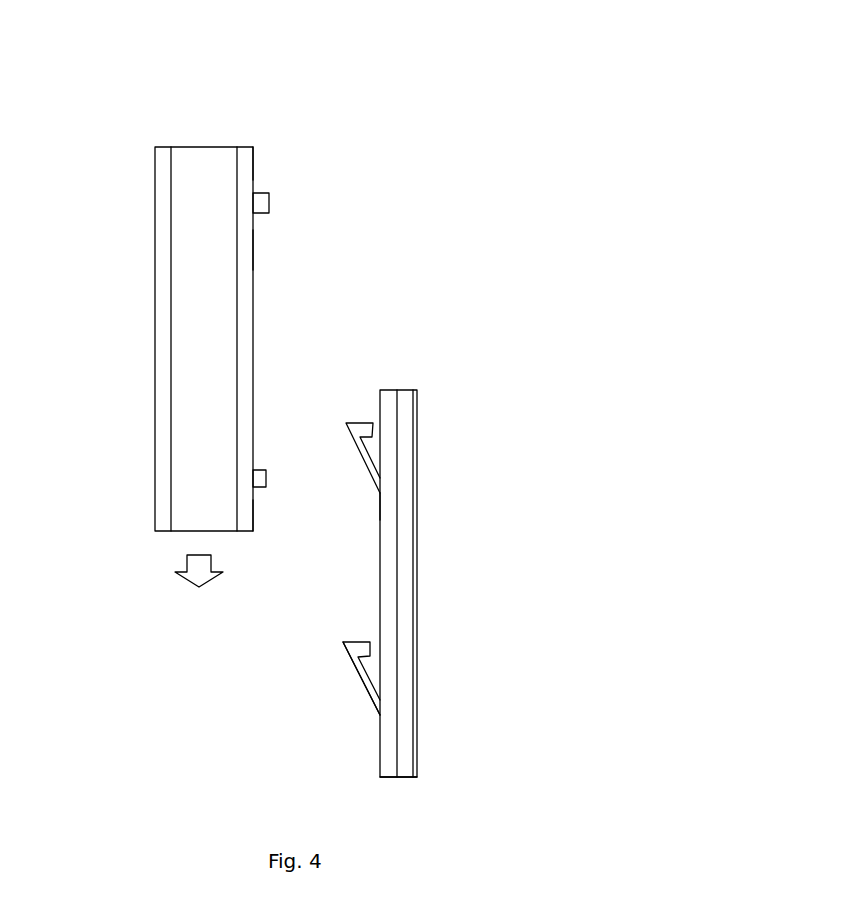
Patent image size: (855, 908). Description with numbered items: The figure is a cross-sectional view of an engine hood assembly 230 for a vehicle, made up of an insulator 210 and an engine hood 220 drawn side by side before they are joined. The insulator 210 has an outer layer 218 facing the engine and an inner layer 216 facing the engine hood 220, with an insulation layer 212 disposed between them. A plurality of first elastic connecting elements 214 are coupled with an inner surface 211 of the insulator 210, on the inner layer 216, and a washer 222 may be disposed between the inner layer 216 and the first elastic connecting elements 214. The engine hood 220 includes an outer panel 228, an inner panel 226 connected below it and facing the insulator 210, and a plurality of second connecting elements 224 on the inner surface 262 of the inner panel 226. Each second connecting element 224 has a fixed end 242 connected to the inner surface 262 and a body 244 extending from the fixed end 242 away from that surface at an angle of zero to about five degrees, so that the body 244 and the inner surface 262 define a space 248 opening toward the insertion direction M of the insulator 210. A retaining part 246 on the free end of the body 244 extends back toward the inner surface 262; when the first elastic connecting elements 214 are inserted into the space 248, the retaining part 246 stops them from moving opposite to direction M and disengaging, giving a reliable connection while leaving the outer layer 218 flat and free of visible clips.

The engine hood assembly 230 is at (427, 92).
The insulator 210 is at (223, 350).
The outer layer 218 is at (163, 203).
The inner layer 216 is at (240, 300).
The inner surface 211 is at (255, 256).
The washer 222 is at (254, 170).
The insulation layer 212 is at (218, 325).
The first elastic connecting elements 214 is at (265, 203).
The engine hood 220 is at (395, 564).
The inner panel 226 is at (390, 497).
The outer panel 228 is at (408, 605).
The second connecting elements 224 is at (342, 543).
The space 248 is at (371, 420).
The retaining part 246 is at (357, 641).
The body 244 is at (357, 686).
The inner surface 262 is at (378, 506).
The fixed end 242 is at (374, 708).